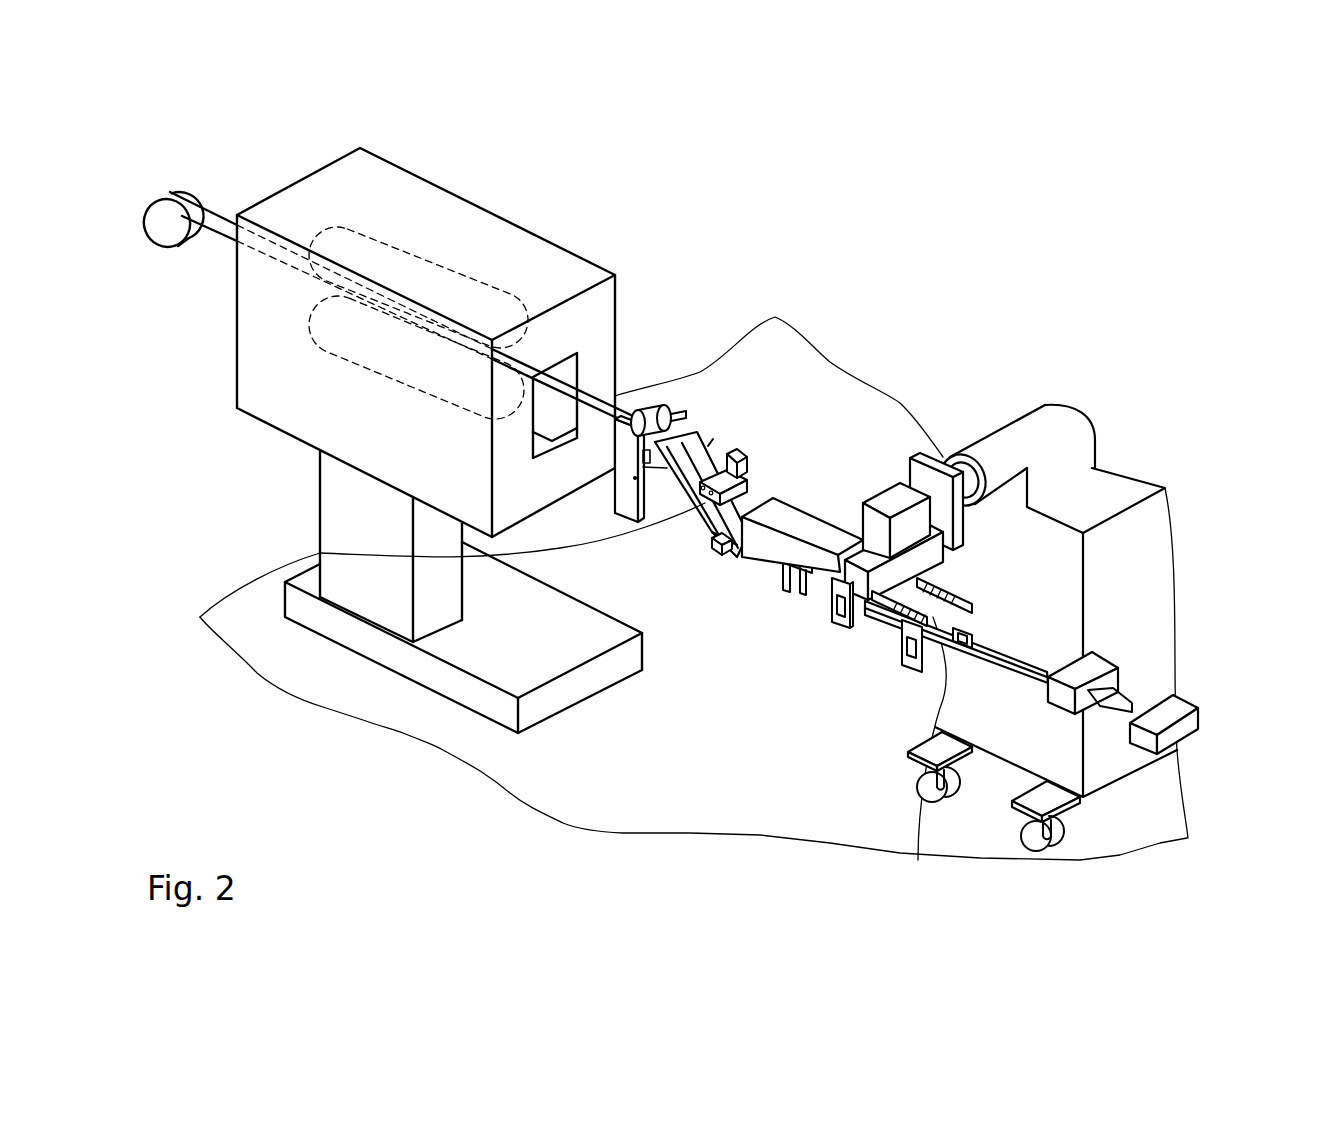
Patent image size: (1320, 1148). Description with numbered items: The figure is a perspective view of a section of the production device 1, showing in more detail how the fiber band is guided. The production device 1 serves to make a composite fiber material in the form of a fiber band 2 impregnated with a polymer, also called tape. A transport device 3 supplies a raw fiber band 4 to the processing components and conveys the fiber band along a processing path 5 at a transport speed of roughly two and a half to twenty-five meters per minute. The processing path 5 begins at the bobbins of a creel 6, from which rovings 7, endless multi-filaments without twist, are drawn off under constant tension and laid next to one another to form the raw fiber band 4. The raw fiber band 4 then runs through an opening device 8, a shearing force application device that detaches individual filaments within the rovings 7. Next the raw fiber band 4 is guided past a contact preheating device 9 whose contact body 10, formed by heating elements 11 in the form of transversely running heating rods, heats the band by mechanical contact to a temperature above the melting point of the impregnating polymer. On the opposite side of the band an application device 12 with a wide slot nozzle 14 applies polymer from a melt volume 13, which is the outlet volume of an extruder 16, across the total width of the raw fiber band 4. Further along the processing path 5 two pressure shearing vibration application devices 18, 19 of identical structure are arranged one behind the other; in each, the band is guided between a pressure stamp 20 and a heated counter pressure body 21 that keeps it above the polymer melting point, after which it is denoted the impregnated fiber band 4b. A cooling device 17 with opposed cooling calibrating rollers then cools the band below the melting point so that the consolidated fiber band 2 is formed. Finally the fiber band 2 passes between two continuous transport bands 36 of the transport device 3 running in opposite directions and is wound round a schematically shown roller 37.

The production device 1 is at (807, 190).
The fiber band 2 is at (583, 402).
The transport device 3 is at (519, 217).
The raw fiber band 4 is at (1010, 640).
The impregnated fiber band 4b is at (683, 440).
The processing path 5 is at (590, 430).
The creel 6 is at (1198, 720).
The rovings 7 is at (1117, 702).
The opening device 8 is at (1097, 663).
The contact preheating device 9 is at (918, 640).
The contact body 10 is at (880, 606).
The heating elements 11 is at (938, 708).
The application device 12 is at (916, 483).
The melt volume 13 is at (900, 497).
The wide slot nozzle 14 is at (858, 606).
The extruder 16 is at (1013, 510).
The cooling device 17 is at (604, 490).
The first pressure shearing vibration application device 18 is at (766, 577).
The second pressure shearing vibration application device 19 is at (767, 464).
The pressure stamp 20 is at (748, 446).
The counter pressure body 21 is at (820, 525).
The continuous transport bands 36 is at (418, 332).
The roller 37 is at (172, 245).